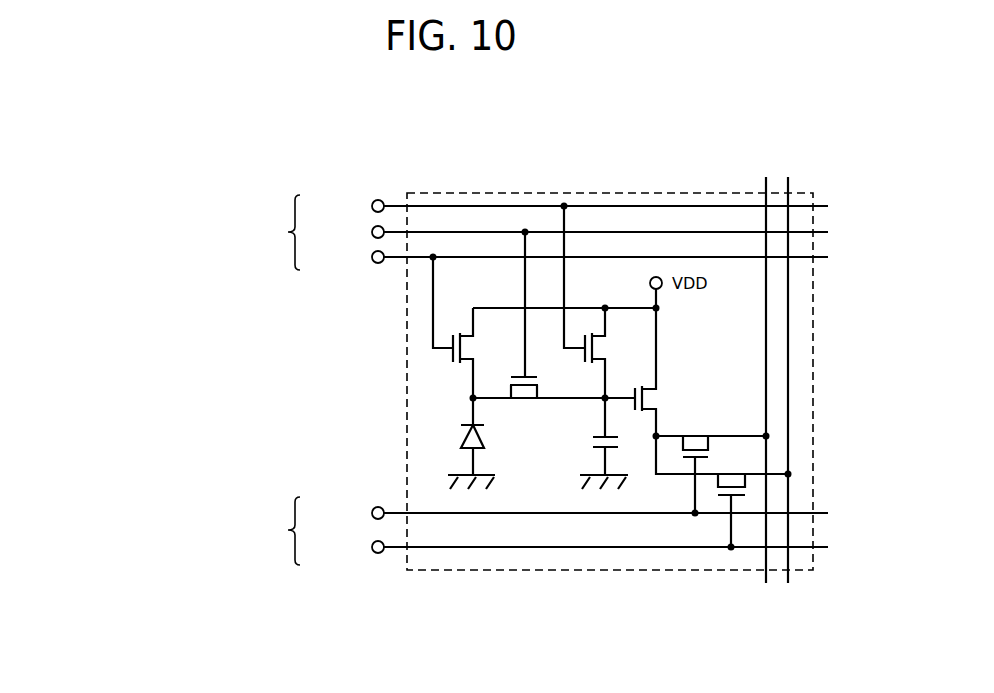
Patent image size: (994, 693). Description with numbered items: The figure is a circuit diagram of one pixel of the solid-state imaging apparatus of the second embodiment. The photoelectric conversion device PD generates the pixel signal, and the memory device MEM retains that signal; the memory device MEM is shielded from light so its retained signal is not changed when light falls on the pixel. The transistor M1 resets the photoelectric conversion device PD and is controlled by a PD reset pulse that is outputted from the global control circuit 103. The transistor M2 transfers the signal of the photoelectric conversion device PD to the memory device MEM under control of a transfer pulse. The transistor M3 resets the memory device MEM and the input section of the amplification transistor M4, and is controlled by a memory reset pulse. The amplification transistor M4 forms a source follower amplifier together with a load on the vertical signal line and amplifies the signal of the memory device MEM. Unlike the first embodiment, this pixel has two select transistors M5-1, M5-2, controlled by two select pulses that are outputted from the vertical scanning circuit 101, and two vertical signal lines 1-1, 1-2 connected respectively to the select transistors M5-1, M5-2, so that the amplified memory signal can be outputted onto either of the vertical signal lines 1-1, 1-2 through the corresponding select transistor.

The first vertical signal line 1-1 is at (787, 178).
The second vertical signal line 1-2 is at (764, 580).
The vertical scanning circuit 101 is at (203, 531).
The global control circuit 103 is at (218, 232).
The transistor for resetting photoelectric conversion device M1 is at (453, 327).
The transistor for transferring signal M2 is at (554, 326).
The transistor for resetting memory device M3 is at (584, 302).
The amplification transistor M4 is at (639, 372).
The select transistor M5-1 is at (722, 491).
The select transistor M5-2 is at (711, 464).
The photoelectric conversion device PD is at (463, 443).
The memory device MEM is at (586, 443).